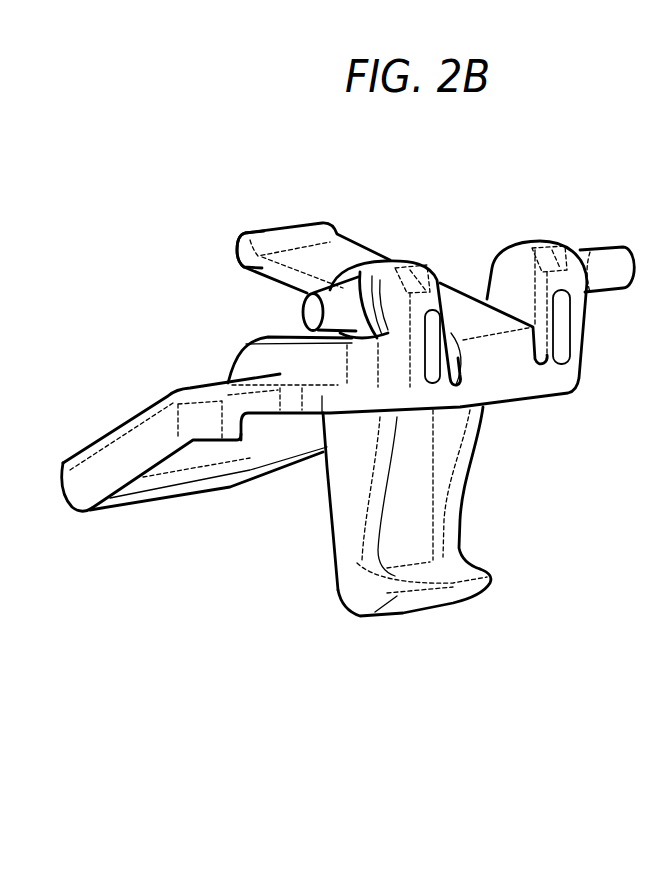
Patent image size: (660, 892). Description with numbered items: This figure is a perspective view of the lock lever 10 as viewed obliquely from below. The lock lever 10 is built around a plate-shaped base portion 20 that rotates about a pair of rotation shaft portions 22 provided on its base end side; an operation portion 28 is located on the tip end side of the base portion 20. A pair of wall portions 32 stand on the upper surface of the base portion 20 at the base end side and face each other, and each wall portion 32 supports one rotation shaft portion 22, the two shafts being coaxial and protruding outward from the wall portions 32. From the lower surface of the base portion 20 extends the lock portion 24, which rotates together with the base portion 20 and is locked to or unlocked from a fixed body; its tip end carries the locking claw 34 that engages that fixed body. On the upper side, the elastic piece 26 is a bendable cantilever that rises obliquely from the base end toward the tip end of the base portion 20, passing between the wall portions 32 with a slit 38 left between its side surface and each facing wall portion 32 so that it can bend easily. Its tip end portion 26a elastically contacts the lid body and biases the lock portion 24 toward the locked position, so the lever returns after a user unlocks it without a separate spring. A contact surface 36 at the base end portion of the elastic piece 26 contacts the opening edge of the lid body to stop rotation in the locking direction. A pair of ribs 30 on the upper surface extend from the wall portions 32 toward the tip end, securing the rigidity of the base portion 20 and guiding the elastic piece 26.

The lock lever 10 is at (378, 663).
The base portion 20 is at (322, 447).
The rotation shaft portions 22 is at (303, 308).
The lock portion 24 is at (423, 523).
The elastic piece 26 is at (345, 259).
The tip end portion 26a is at (273, 228).
The operation portion 28 is at (75, 490).
The ribs 30 is at (247, 377).
The wall portions 32 is at (352, 368).
The locking claw 34 is at (447, 578).
The contact surface 36 is at (513, 363).
The slit 38 is at (453, 364).